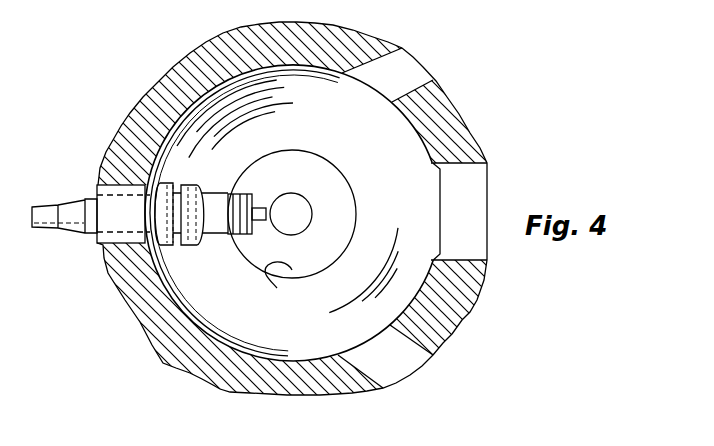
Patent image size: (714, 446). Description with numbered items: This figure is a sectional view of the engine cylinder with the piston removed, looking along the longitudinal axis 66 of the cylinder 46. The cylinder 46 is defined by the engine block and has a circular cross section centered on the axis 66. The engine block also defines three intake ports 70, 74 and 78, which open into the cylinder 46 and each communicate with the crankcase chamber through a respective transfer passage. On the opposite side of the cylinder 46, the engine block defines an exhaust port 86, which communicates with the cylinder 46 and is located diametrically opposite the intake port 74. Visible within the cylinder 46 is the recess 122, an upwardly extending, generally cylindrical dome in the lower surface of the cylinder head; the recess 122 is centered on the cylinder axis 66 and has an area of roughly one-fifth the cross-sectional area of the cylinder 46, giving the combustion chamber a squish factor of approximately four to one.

The intake port 78 is at (400, 49).
The cylinder 46 is at (420, 147).
The exhaust port 86 is at (487, 166).
The intake port 70 is at (422, 344).
The intake port 74 is at (112, 244).
The longitudinal axis 66 is at (295, 214).
The recess 122 is at (272, 288).